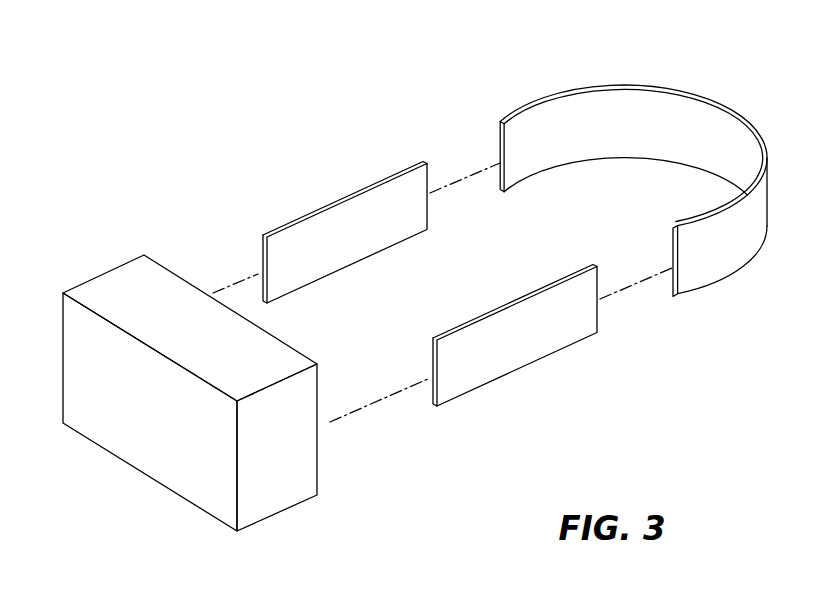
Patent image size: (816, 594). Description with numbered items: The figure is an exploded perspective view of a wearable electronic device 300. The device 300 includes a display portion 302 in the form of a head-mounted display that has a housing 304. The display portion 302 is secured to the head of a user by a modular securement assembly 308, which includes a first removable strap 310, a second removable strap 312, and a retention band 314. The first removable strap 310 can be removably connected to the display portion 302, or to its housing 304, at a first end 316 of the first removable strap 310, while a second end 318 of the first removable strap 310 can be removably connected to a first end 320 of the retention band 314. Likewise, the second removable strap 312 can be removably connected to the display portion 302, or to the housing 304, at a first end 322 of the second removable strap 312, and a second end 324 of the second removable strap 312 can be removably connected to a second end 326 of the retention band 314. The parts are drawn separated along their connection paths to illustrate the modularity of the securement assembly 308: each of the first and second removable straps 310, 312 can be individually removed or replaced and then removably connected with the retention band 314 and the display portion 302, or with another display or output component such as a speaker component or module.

The wearable electronic device 300 is at (376, 492).
The display portion 302 is at (190, 476).
The housing 304 is at (115, 443).
The modular securement assembly 308 is at (651, 306).
The first removable strap 310 is at (470, 363).
The second removable strap 312 is at (323, 235).
The retention band 314 is at (675, 118).
The first end of the first removable strap 316 is at (432, 390).
The second end of the first removable strap 318 is at (597, 310).
The first end of the retention band 320 is at (673, 250).
The first end of the second removable strap 322 is at (263, 265).
The second end of the second removable strap 324 is at (430, 178).
The second end of the retention band 326 is at (503, 150).